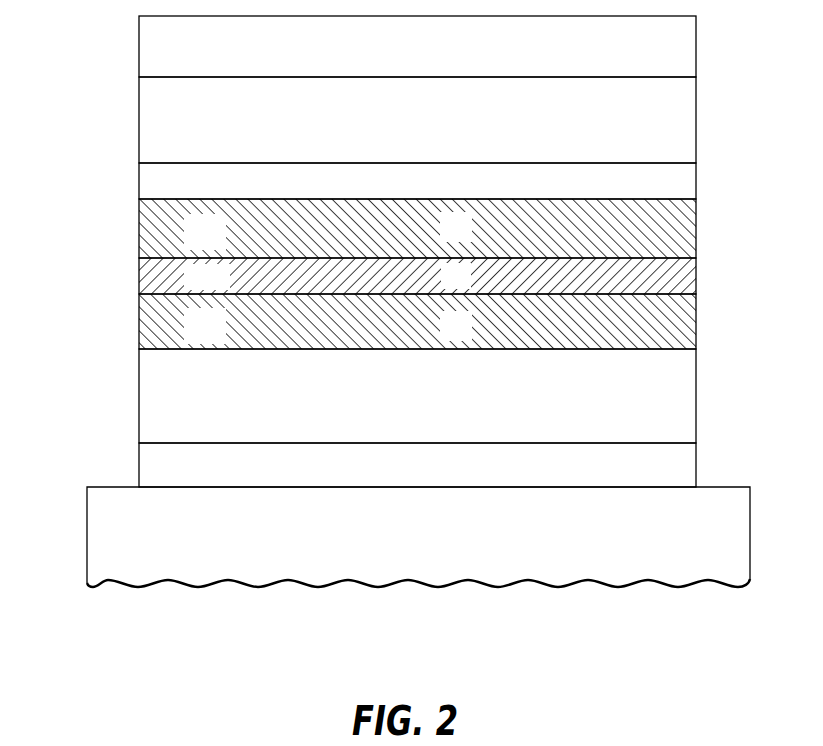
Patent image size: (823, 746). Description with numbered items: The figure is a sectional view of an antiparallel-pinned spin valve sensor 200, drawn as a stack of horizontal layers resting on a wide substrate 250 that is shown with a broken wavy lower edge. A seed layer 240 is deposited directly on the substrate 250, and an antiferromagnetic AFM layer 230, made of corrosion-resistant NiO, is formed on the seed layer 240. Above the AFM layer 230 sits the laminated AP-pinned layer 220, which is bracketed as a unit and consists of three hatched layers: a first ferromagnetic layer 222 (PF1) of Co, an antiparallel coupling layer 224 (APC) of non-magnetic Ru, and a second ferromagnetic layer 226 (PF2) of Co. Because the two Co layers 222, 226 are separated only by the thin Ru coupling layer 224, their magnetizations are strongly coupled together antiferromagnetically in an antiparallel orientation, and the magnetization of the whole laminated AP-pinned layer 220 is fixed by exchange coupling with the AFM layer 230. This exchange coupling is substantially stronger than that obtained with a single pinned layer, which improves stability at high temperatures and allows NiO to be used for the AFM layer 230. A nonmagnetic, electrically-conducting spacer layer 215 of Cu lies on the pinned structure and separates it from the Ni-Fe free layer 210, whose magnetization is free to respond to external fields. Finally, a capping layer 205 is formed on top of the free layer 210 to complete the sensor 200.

The AP-pinned SV sensor 200 is at (128, 633).
The capping layer 205 is at (140, 58).
The free layer 210 is at (140, 130).
The spacer layer 215 is at (140, 185).
The laminated AP-pinned layer 220 is at (707, 199).
The first ferromagnetic layer 222 is at (140, 327).
The antiparallel coupling layer 224 is at (140, 280).
The second ferromagnetic layer 226 is at (140, 232).
The AFM layer 230 is at (140, 400).
The seed layer 240 is at (140, 468).
The substrate 250 is at (88, 560).